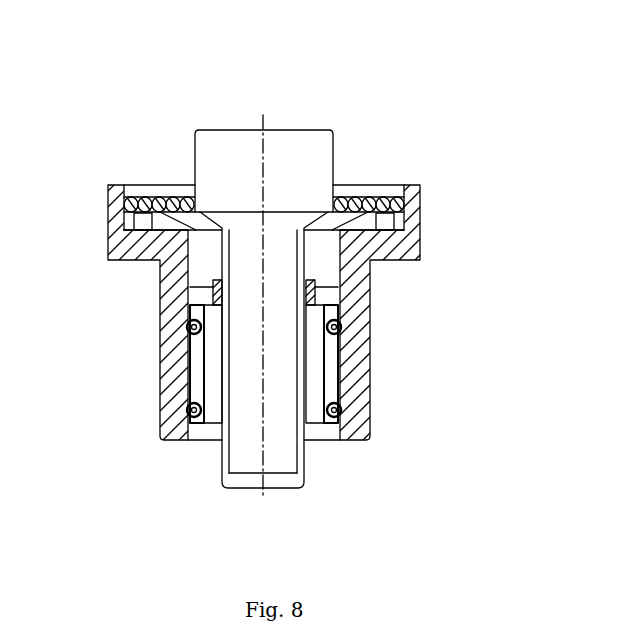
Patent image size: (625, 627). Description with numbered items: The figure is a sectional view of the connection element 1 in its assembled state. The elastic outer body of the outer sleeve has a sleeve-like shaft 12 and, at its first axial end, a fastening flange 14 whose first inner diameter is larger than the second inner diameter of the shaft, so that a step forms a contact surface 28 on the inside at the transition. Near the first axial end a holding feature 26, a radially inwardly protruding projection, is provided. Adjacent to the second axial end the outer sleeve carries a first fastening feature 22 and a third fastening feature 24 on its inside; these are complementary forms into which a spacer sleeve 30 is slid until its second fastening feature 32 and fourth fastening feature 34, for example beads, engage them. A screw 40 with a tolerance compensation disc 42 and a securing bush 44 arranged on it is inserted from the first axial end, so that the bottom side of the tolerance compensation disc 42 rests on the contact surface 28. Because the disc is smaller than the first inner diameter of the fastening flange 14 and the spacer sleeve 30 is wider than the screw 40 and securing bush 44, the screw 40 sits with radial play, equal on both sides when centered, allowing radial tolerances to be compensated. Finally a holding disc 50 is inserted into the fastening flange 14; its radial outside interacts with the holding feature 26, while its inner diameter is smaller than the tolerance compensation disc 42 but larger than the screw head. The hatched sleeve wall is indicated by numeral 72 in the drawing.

The connection element 1 is at (585, 42).
The sleeve-like shaft 12 is at (264, 312).
The fastening flange 14 is at (420, 210).
The first fastening feature 22 is at (347, 412).
The third fastening feature 24 is at (347, 327).
The holding feature 26 is at (130, 188).
The contact surface 28 is at (120, 227).
The spacer sleeve 30 is at (187, 370).
The second fastening feature 32 is at (187, 412).
The fourth fastening feature 34 is at (187, 328).
The screw 40 is at (238, 145).
The tolerance compensation disc 42 is at (377, 222).
The securing bush 44 is at (213, 290).
The holding disc 50 is at (371, 207).
The housing body wall 72 is at (357, 365).